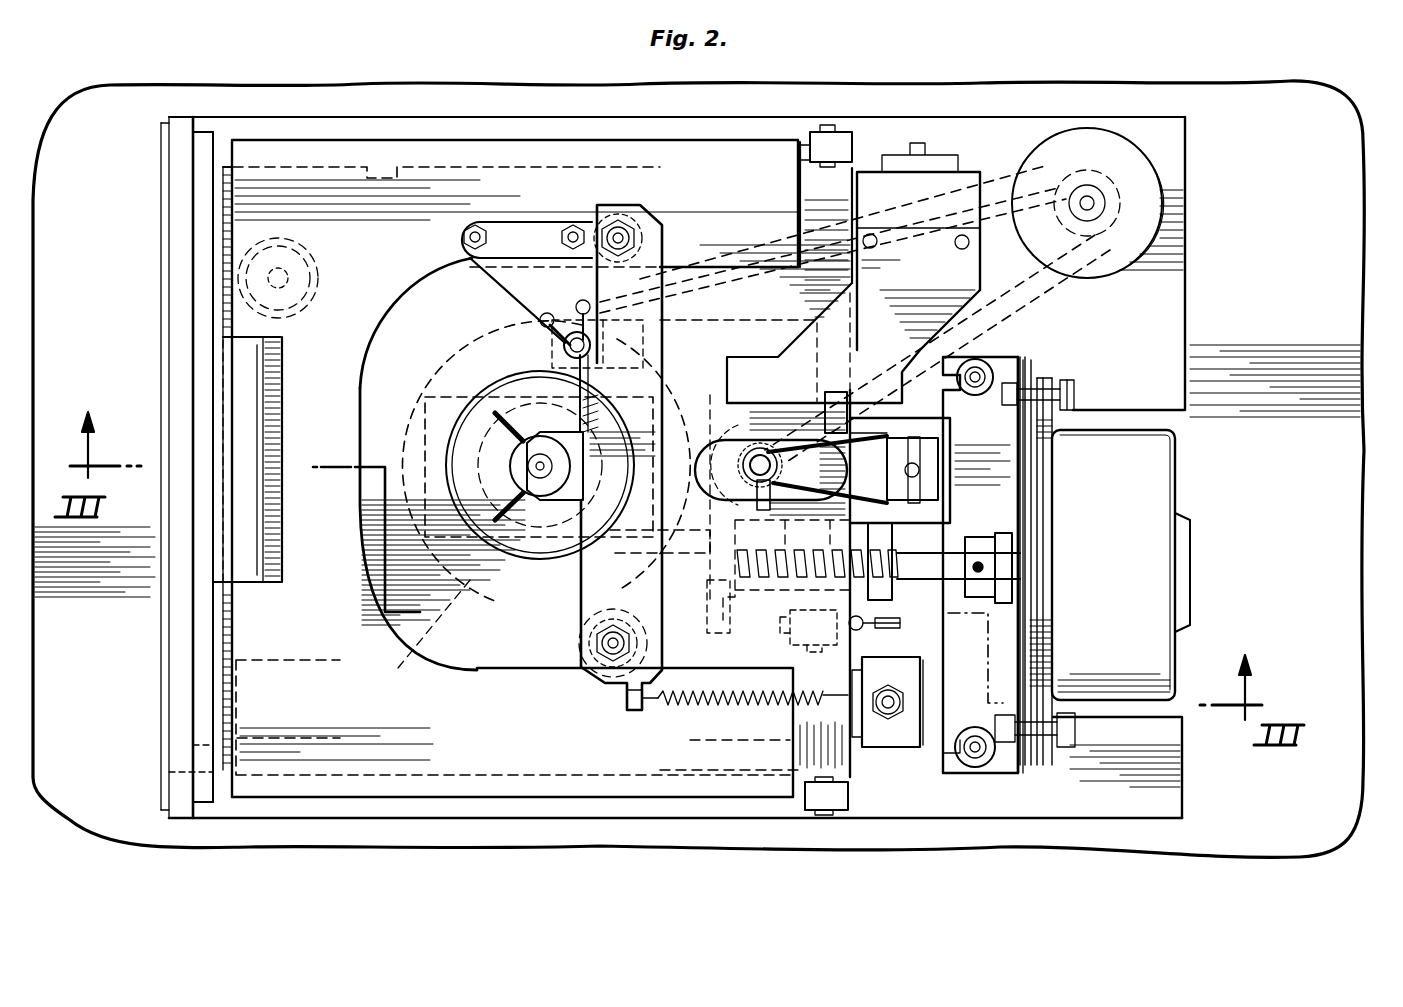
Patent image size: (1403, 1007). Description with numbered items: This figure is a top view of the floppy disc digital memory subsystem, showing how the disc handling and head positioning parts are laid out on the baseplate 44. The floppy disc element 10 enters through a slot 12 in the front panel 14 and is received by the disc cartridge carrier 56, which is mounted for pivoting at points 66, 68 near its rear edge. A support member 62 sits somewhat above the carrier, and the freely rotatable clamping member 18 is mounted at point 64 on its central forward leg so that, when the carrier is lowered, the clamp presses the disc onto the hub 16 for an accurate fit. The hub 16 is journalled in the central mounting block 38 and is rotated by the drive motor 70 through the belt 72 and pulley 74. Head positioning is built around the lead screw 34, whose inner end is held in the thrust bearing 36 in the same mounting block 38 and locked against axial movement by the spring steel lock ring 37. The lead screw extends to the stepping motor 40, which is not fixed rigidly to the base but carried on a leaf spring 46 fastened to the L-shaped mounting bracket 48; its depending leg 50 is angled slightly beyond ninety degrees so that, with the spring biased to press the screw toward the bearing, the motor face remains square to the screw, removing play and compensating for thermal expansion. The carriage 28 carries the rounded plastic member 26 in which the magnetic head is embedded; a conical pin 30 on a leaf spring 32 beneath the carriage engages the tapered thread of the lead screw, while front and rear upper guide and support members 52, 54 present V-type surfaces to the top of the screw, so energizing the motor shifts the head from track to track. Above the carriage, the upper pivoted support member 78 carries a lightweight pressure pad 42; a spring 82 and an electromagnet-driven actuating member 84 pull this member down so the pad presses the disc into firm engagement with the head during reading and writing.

The floppy disc element 10 is at (230, 303).
The slot 12 is at (187, 170).
The front panel 14 is at (180, 608).
The hub 16 is at (505, 407).
The clamping member 18 is at (473, 507).
The rounded plastic member 26 is at (700, 440).
The carriage 28 is at (945, 453).
The conical pin 30 is at (810, 648).
The leaf spring 32 is at (745, 730).
The lead screw 34 is at (903, 563).
The thrust bearing 36 is at (645, 705).
The spring steel lock ring 37 is at (597, 576).
The central mounting block 38 is at (375, 405).
The stepping motor 40 is at (1142, 467).
The pressure pad 42 is at (752, 400).
The baseplate 44 is at (305, 122).
The leaf spring 46 is at (1030, 617).
The L-shaped mounting bracket 48 is at (950, 765).
The depending leg 50 is at (1023, 765).
The front upper guide and support member 52 is at (803, 663).
The rear upper guide and support member 54 is at (893, 600).
The disc cartridge carrier 56 is at (485, 187).
The support member 62 is at (650, 250).
The mounting point 64 is at (538, 470).
The pivot point 66 is at (823, 815).
The pivot point 68 is at (830, 127).
The drive motor 70 is at (1133, 185).
The belt 72 is at (1000, 303).
The pulley 74 is at (414, 636).
The upper pivoted support member 78 is at (890, 440).
The spring 82 is at (920, 467).
The actuating member 84 is at (915, 277).